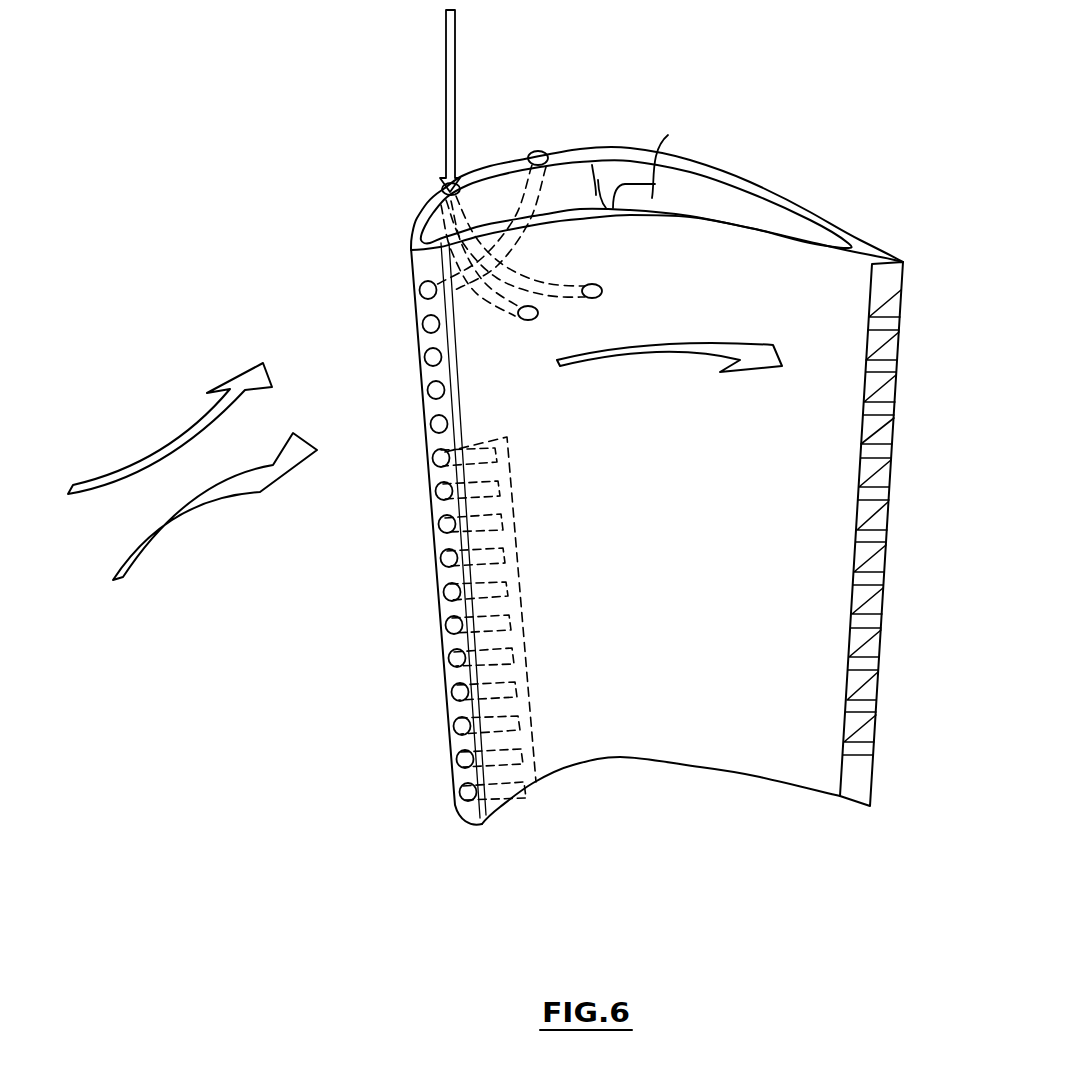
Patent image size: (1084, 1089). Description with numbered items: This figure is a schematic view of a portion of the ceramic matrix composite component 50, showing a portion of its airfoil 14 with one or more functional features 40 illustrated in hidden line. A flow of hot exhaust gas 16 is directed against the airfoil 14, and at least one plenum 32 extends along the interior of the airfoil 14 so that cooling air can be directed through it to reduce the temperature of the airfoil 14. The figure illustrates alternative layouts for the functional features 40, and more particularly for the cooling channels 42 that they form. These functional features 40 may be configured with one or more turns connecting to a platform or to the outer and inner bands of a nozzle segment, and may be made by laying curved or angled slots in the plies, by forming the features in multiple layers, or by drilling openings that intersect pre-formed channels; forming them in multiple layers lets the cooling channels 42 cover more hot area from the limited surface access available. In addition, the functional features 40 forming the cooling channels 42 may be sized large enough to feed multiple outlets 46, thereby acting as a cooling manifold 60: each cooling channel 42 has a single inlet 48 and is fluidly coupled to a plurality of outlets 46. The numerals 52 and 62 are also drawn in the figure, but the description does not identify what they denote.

The airfoil 14 is at (850, 558).
The flow of hot exhaust gas 16 is at (660, 345).
The plenum 32 is at (598, 193).
The functional features 40 is at (552, 272).
The cooling channels 42 is at (520, 593).
The outlets 46 is at (424, 361).
The inlet 48 is at (428, 184).
The CMC component 50 is at (230, 100).
The airfoil tip 52 is at (805, 112).
The cooling manifold 60 is at (533, 733).
The feed tube 62 is at (446, 47).